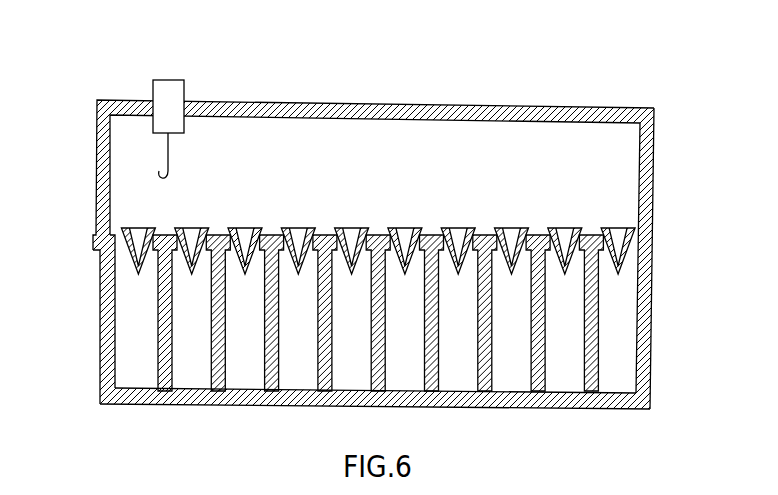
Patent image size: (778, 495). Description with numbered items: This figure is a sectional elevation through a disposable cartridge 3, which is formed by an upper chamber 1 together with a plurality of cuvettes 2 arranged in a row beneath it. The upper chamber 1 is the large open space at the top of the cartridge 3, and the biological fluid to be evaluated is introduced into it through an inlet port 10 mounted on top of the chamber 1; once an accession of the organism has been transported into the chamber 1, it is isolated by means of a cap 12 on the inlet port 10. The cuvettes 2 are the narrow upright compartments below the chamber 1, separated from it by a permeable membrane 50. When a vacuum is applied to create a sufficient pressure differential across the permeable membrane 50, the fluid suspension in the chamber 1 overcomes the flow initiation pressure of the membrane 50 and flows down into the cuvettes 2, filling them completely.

The upper chamber 1 is at (125, 173).
The cuvettes 2 is at (625, 336).
The disposable cartridge 3 is at (657, 160).
The inlet port 10 is at (182, 103).
The cap 12 is at (153, 92).
The permeable membrane 50 is at (215, 207).